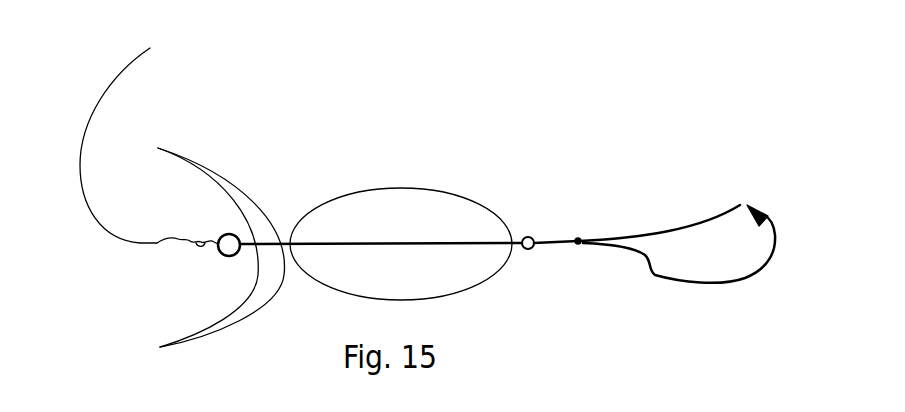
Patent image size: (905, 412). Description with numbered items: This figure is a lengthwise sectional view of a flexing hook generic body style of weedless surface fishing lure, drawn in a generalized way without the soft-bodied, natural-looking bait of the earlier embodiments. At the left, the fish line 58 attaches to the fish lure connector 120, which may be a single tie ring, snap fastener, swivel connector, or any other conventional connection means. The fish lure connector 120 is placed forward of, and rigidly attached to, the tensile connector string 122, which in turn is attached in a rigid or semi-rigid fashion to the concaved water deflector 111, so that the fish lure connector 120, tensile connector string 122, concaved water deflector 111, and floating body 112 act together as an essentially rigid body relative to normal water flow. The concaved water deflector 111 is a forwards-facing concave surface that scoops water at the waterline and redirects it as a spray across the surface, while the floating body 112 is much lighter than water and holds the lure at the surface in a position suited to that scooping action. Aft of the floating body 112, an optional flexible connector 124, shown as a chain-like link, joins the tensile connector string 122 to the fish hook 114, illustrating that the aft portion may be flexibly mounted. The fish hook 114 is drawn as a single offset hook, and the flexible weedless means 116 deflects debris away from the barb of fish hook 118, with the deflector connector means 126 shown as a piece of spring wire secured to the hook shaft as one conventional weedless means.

The fish line 58 is at (110, 78).
The concaved water deflector 111 is at (250, 187).
The floating body 112 is at (448, 192).
The fish hook 114 is at (728, 284).
The flexible weedless means 116 is at (713, 217).
The barb of fish hook 118 is at (752, 201).
The fish lure connector 120 is at (223, 257).
The tensile connector string 122 is at (336, 247).
The flexible connector 124 is at (523, 250).
The deflector connector means 126 is at (583, 250).